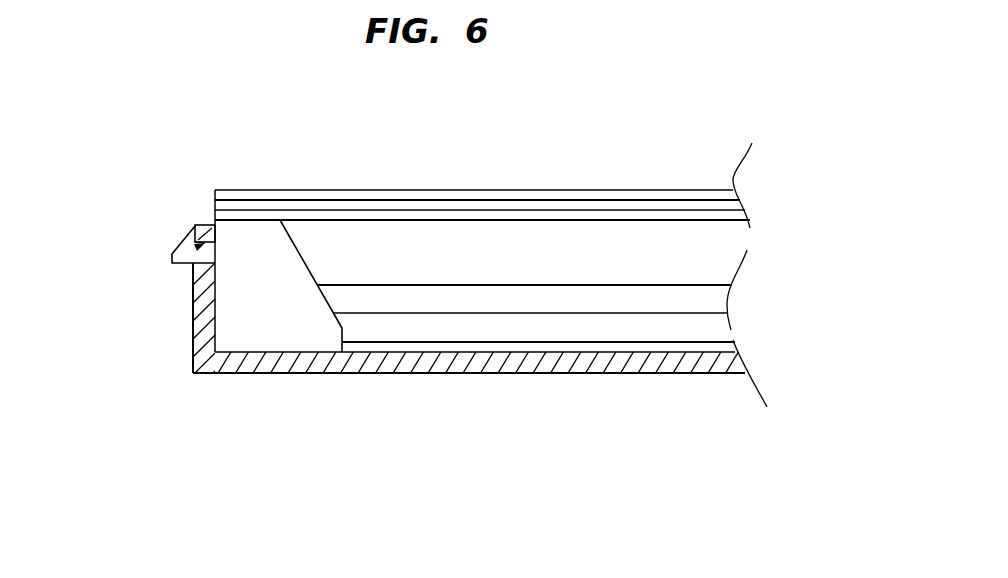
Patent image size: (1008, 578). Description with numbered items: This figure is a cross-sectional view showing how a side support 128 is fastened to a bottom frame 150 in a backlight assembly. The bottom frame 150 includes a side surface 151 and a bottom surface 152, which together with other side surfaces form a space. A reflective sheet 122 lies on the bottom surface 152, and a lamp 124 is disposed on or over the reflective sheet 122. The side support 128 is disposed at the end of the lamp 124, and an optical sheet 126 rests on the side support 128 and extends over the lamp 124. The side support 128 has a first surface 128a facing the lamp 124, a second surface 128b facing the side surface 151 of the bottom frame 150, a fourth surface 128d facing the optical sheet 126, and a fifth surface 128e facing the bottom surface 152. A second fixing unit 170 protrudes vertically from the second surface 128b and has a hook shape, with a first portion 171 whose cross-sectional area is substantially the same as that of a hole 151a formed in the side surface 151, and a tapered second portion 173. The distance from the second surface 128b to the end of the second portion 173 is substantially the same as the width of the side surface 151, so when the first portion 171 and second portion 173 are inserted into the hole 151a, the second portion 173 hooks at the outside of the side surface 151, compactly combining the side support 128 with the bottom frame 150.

The reflective sheet 122 is at (720, 348).
The lamp 124 is at (705, 298).
The optical sheet 126 is at (750, 185).
The side support 128 is at (388, 127).
The first surface 128a is at (293, 252).
The second surface 128b is at (217, 280).
The fourth surface 128d is at (258, 216).
The fifth surface 128e is at (305, 352).
The bottom frame 150 is at (412, 326).
The side surface 151 is at (230, 375).
The hole 151a is at (187, 237).
The bottom surface 152 is at (393, 365).
The second fixing unit 170 is at (113, 231).
The first portion 171 is at (188, 255).
The second portion 173 is at (190, 247).